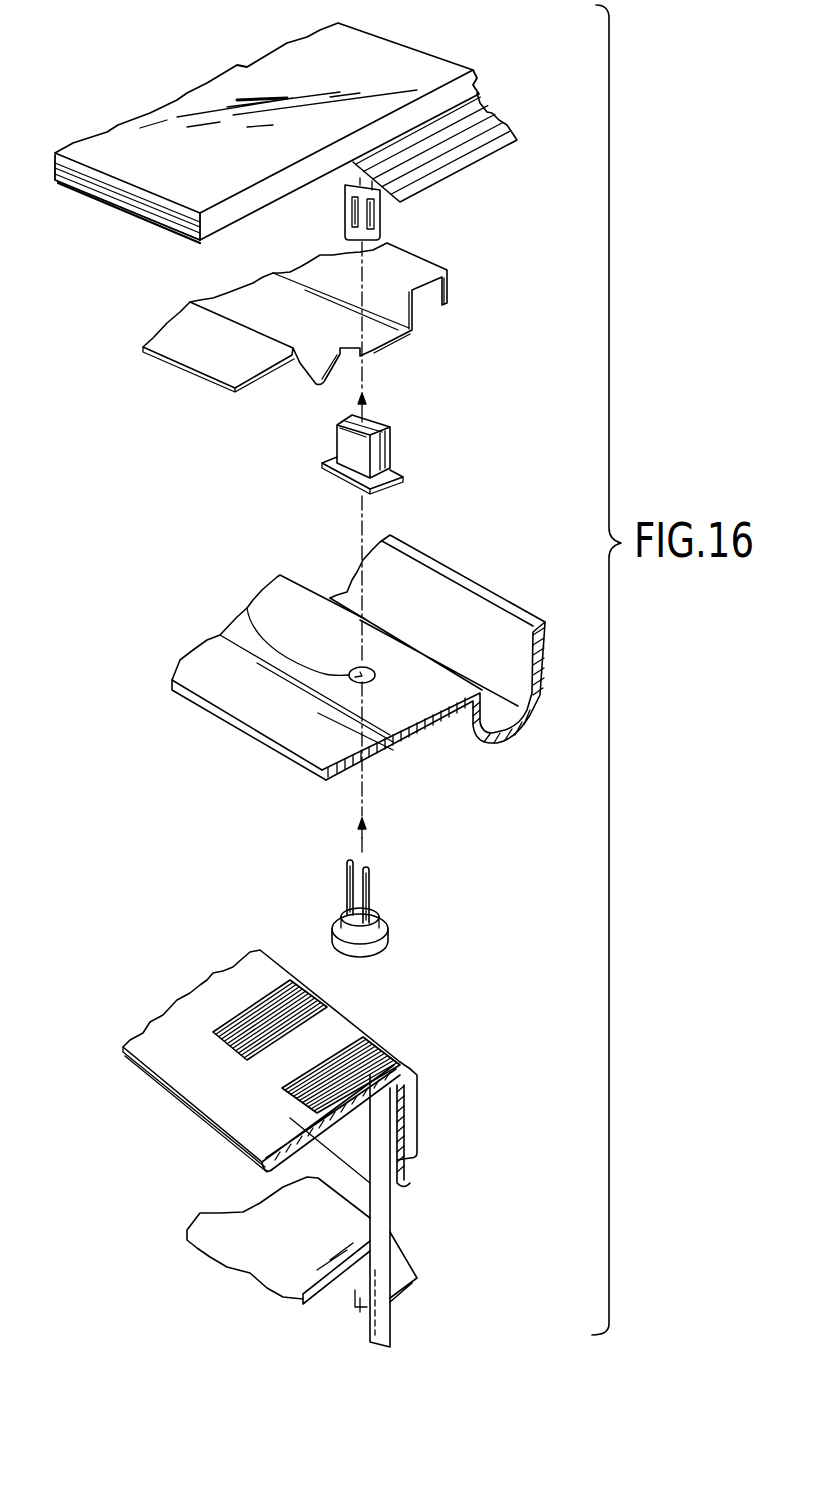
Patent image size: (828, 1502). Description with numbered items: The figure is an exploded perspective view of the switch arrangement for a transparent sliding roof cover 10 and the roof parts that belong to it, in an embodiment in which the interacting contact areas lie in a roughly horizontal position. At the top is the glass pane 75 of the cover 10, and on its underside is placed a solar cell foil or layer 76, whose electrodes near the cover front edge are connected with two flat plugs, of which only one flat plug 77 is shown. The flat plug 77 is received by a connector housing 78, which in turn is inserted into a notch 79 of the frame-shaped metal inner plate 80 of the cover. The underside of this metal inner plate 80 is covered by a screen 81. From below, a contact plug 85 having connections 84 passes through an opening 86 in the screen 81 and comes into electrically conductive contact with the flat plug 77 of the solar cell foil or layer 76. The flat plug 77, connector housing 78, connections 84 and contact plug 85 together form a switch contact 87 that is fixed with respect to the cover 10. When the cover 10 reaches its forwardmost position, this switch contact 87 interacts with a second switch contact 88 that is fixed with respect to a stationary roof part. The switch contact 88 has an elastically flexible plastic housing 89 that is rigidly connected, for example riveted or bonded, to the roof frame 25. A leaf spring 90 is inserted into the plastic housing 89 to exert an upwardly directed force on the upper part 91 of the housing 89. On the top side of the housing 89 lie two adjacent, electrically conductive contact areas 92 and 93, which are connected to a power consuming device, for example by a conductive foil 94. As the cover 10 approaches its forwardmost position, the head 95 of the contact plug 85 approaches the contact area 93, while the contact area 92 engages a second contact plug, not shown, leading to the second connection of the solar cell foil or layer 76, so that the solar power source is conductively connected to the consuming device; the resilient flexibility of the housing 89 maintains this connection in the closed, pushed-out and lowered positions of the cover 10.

The cover 10 is at (490, 70).
The glass pane 75 is at (140, 130).
The solar cell foil or layer 76 is at (448, 159).
The flat plug 77 is at (377, 218).
The connector housing 78 is at (347, 440).
The notch 79 is at (358, 352).
The metal inner plate 80 is at (215, 348).
The screen 81 is at (381, 657).
The connections 84 is at (352, 860).
The contact plug 85 is at (387, 900).
The opening 86 is at (242, 610).
The switch contact 87 is at (423, 437).
The switch contact 88 is at (320, 1145).
The plastic housing 89 is at (417, 1102).
The leaf spring 90 is at (270, 1150).
The upper part 91 is at (183, 1028).
The contact area 92 is at (300, 1002).
The contact area 93 is at (387, 1045).
The conductive foil 94 is at (380, 1195).
The head 95 is at (337, 930).
The roof frame 25 is at (235, 1235).